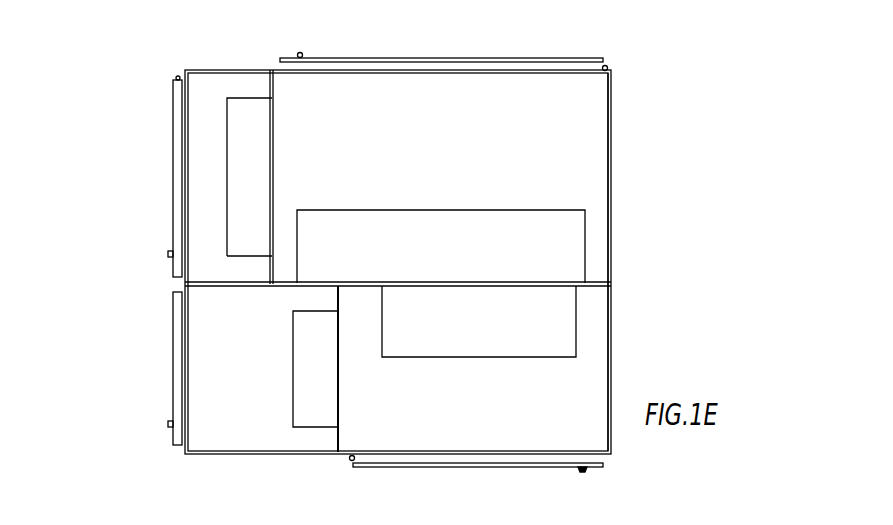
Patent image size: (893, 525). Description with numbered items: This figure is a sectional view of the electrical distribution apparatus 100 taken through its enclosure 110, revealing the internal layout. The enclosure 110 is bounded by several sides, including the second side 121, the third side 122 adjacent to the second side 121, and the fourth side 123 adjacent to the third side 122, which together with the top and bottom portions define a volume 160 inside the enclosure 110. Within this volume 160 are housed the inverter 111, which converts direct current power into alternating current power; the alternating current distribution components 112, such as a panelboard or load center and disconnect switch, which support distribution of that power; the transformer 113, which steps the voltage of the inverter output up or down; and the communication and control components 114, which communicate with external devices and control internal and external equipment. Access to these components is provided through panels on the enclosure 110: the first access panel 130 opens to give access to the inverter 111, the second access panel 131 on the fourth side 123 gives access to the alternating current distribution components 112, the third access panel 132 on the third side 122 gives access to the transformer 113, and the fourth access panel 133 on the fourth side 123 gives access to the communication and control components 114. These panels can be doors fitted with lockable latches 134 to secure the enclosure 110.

The electrical distribution apparatus 100 is at (140, 64).
The enclosure 110 is at (622, 83).
The inverter 111 is at (497, 357).
The alternating current distribution components 112 is at (240, 98).
The transformer 113 is at (510, 210).
The communication and control components 114 is at (293, 355).
The second side 121 is at (612, 240).
The third side 122 is at (272, 72).
The fourth side 123 is at (185, 284).
The first access panel 130 is at (397, 467).
The second access panel 131 is at (173, 148).
The third access panel 132 is at (510, 58).
The fourth access panel 133 is at (173, 350).
The lockable latch 134 is at (585, 472).
The volume 160 is at (592, 384).